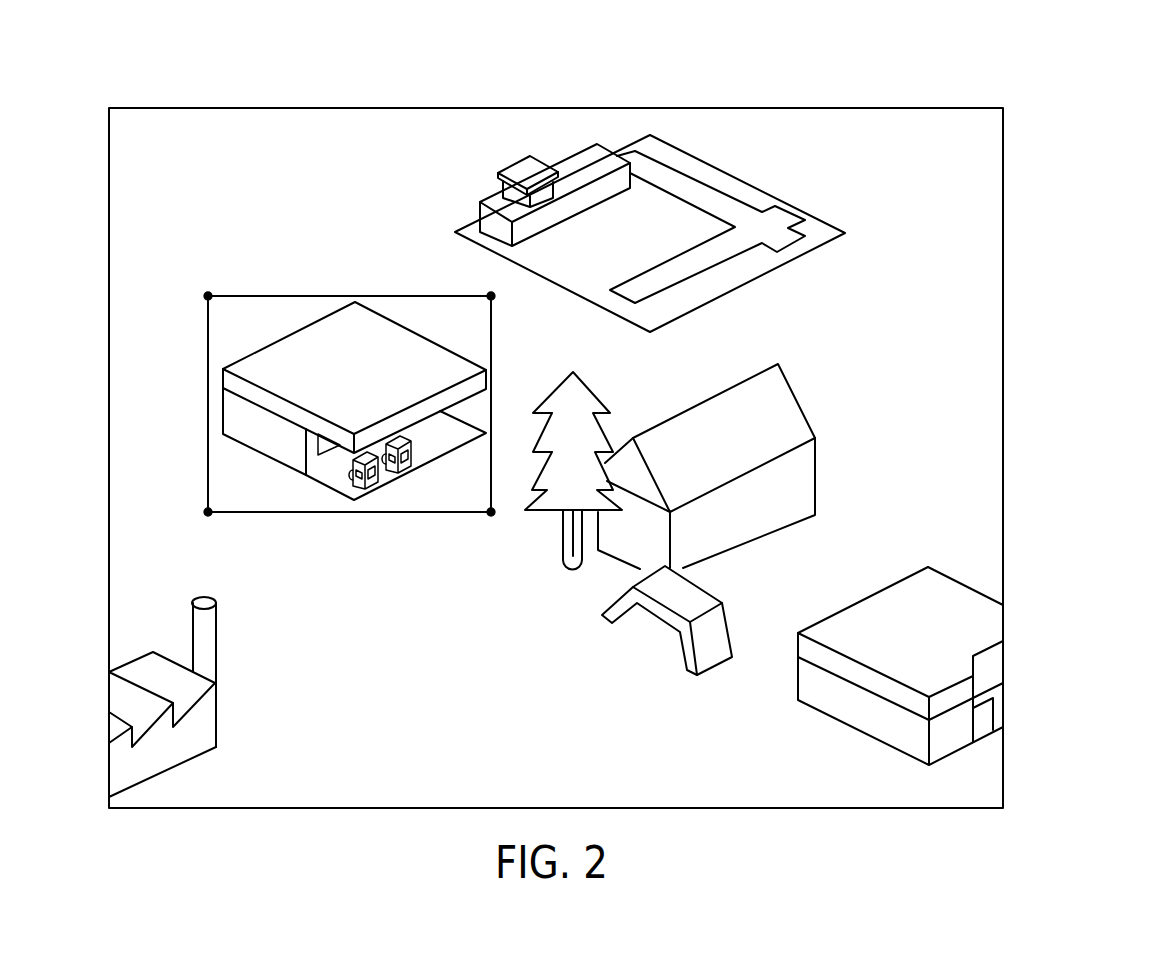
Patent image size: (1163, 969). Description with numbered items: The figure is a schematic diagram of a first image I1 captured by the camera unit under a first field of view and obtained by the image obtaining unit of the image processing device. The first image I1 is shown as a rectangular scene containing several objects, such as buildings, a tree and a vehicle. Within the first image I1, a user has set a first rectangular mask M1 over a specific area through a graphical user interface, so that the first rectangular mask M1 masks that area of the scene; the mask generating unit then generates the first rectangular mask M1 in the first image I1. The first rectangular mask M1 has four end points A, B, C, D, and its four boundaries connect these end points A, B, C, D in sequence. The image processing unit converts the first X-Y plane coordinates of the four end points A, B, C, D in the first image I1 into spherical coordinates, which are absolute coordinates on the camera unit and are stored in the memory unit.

The first image I1 is at (1042, 123).
The first rectangular mask M1 is at (326, 294).
The end point A is at (489, 295).
The end point B is at (208, 292).
The end point C is at (208, 516).
The end point D is at (491, 516).